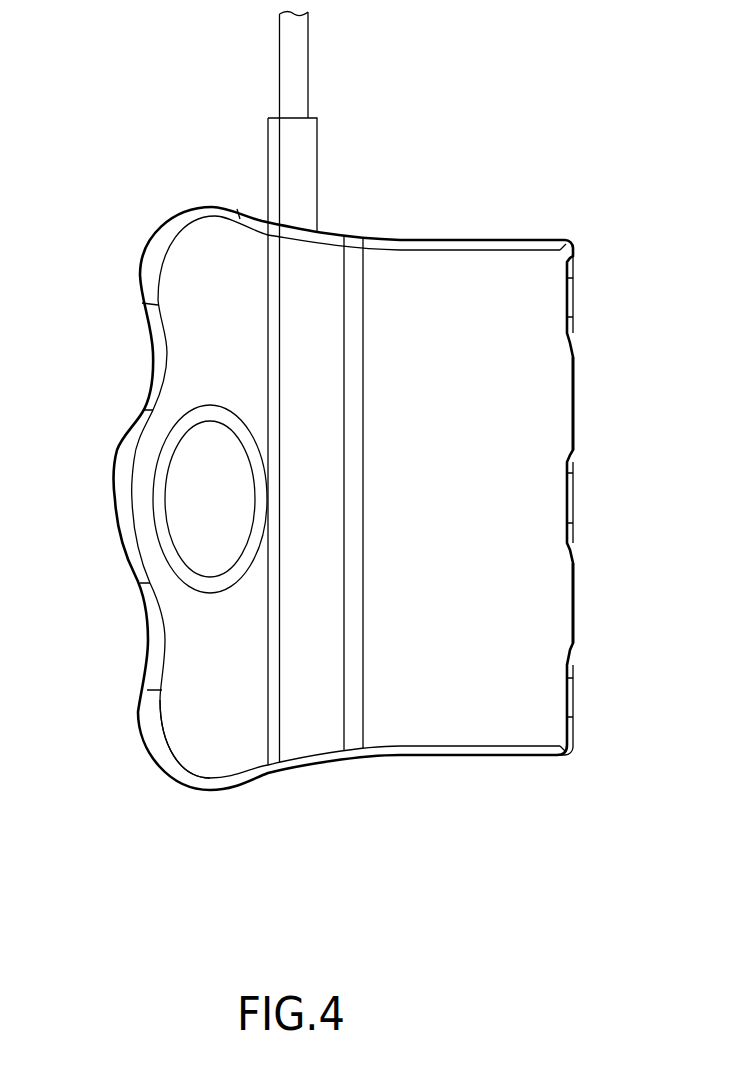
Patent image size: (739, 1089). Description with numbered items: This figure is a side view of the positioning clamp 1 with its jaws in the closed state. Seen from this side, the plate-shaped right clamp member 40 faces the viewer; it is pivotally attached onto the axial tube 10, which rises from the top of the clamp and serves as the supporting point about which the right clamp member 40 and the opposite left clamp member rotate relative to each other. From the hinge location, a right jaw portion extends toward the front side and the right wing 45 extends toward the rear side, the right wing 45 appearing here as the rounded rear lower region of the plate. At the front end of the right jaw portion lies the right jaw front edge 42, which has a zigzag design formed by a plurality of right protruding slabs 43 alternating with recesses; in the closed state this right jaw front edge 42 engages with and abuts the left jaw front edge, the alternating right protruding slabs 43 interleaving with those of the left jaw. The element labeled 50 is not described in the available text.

The positioning clamp 1 is at (110, 140).
The axial tube 10 is at (297, 165).
The right clamp member 40 is at (317, 740).
The right jaw front edge 42 is at (606, 690).
The right protruding slab 43 is at (570, 392).
The right wing 45 is at (190, 753).
The cable 50 is at (297, 58).